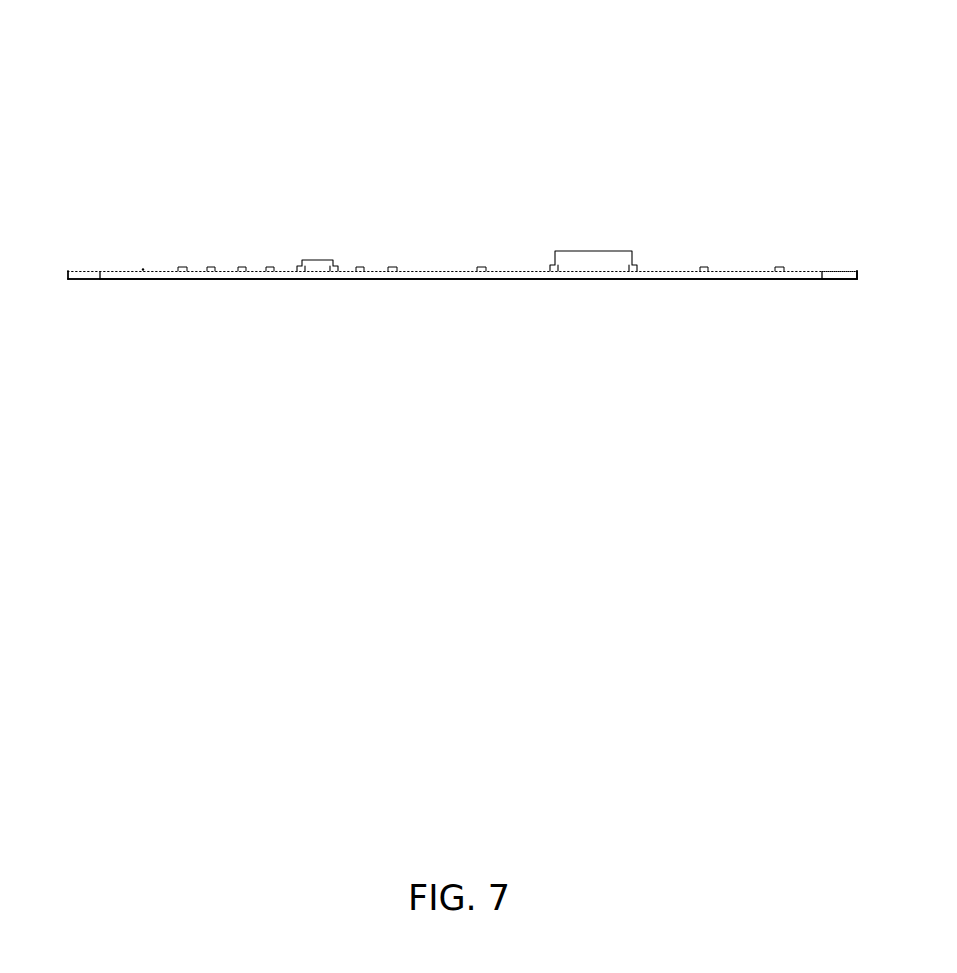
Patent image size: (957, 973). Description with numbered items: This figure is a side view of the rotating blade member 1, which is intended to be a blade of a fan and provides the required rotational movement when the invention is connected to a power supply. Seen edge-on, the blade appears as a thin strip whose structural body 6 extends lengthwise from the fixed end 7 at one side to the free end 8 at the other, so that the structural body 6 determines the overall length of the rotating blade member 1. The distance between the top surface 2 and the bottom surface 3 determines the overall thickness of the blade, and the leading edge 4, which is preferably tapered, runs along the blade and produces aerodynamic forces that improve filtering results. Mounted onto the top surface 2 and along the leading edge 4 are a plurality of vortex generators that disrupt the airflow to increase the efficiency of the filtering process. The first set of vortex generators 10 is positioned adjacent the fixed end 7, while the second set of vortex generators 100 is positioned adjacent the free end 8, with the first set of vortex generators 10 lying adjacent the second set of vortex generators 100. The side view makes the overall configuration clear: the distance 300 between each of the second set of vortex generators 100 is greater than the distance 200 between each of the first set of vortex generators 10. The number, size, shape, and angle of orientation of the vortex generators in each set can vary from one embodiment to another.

The rotating blade member 1 is at (705, 118).
The top surface 2 is at (125, 261).
The bottom surface 3 is at (131, 291).
The leading edge 4 is at (437, 279).
The structural body 6 is at (860, 278).
The fixed end 7 is at (68, 273).
The free end 8 is at (857, 278).
The first set of vortex generators 10 is at (182, 267).
The second set of vortex generators 100 is at (480, 267).
The distance between each of the first set of vortex generators 200 is at (317, 259).
The distance between each of the second set of vortex generators 300 is at (593, 251).